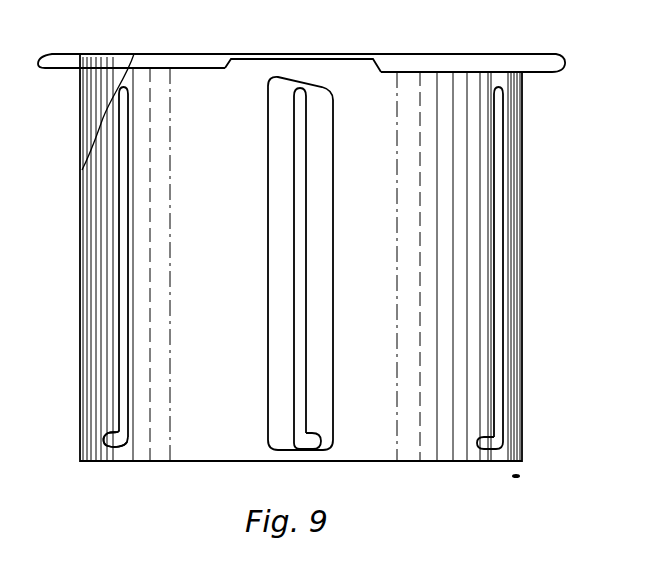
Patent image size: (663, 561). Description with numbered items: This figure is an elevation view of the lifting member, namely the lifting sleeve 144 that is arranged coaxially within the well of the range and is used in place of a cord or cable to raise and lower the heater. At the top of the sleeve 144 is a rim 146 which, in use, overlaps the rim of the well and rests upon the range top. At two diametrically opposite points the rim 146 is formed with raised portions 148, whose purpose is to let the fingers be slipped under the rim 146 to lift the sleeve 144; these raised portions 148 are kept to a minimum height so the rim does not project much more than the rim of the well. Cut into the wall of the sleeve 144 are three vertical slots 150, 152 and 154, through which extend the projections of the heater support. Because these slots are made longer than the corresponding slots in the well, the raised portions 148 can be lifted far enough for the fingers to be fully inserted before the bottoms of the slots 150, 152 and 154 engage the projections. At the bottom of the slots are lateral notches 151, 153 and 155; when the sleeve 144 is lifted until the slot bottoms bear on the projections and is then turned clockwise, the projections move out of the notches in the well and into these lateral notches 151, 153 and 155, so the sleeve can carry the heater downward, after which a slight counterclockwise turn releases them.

The lifting sleeve 144 is at (584, 240).
The rim 146 is at (561, 69).
The raised portions 148 is at (322, 53).
The vertical slot 150 is at (120, 322).
The lateral notch 151 is at (112, 443).
The vertical slot 152 is at (306, 292).
The lateral notch 153 is at (308, 446).
The vertical slot 154 is at (503, 296).
The lateral notch 155 is at (484, 443).